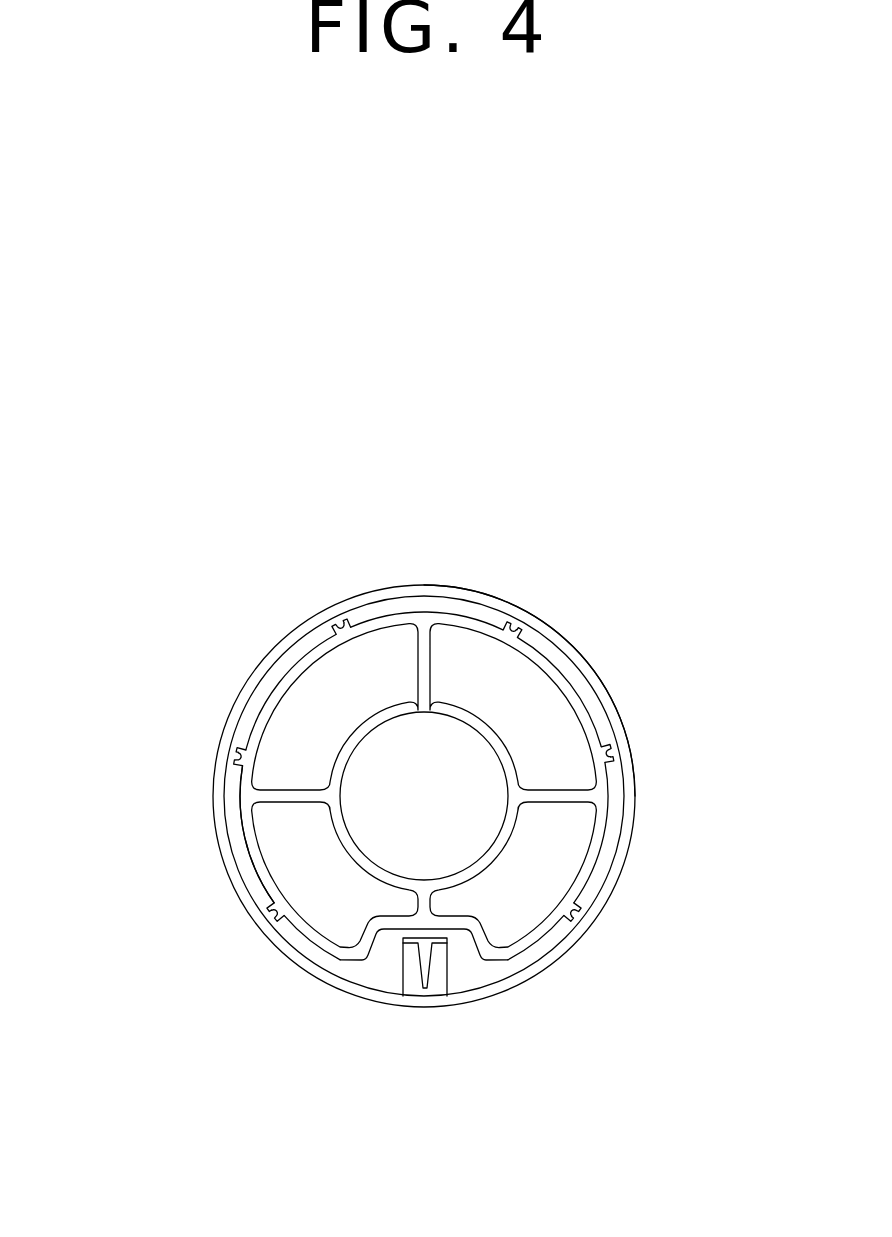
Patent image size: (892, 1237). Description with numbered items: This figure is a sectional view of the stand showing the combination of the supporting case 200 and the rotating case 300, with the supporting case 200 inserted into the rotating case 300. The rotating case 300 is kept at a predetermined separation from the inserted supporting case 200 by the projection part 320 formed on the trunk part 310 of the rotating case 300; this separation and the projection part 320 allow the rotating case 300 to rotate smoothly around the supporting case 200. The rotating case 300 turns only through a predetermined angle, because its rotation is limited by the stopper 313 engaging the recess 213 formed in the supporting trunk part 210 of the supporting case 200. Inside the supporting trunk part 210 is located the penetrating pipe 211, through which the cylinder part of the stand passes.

The supporting case 200 is at (282, 672).
The supporting trunk part 210 is at (253, 723).
The penetrating pipe 211 is at (335, 827).
The recess 213 is at (380, 950).
The rotating case 300 is at (592, 656).
The trunk part 310 is at (622, 713).
The stopper 313 is at (437, 985).
The projection part 320 is at (623, 758).